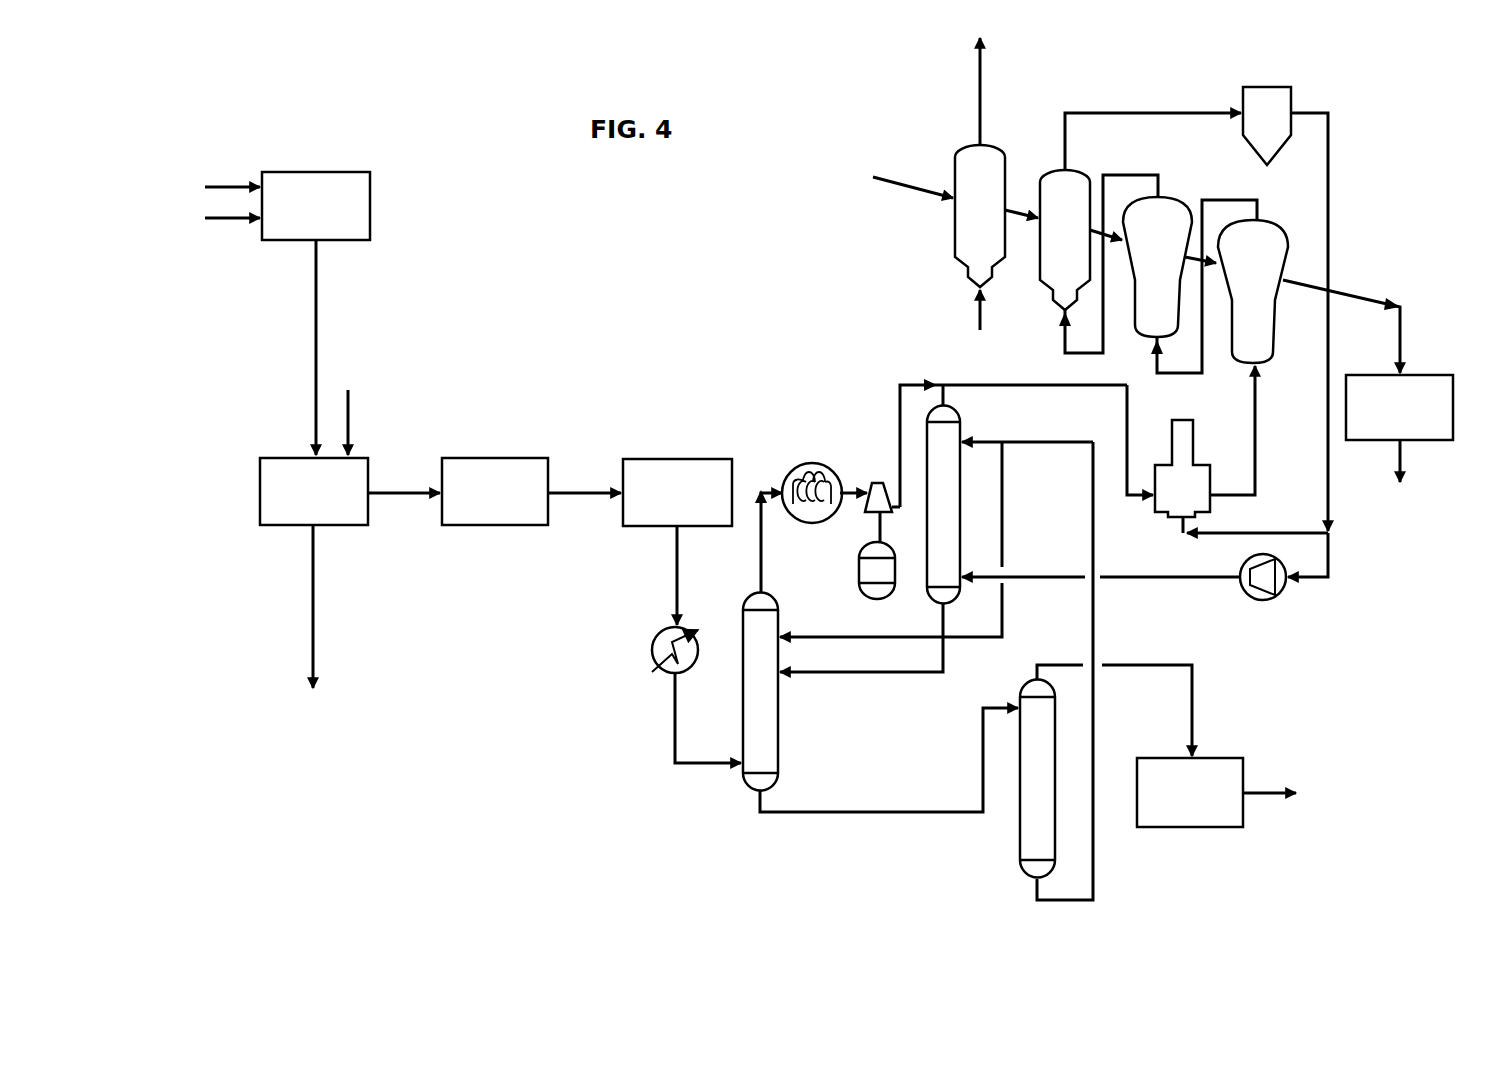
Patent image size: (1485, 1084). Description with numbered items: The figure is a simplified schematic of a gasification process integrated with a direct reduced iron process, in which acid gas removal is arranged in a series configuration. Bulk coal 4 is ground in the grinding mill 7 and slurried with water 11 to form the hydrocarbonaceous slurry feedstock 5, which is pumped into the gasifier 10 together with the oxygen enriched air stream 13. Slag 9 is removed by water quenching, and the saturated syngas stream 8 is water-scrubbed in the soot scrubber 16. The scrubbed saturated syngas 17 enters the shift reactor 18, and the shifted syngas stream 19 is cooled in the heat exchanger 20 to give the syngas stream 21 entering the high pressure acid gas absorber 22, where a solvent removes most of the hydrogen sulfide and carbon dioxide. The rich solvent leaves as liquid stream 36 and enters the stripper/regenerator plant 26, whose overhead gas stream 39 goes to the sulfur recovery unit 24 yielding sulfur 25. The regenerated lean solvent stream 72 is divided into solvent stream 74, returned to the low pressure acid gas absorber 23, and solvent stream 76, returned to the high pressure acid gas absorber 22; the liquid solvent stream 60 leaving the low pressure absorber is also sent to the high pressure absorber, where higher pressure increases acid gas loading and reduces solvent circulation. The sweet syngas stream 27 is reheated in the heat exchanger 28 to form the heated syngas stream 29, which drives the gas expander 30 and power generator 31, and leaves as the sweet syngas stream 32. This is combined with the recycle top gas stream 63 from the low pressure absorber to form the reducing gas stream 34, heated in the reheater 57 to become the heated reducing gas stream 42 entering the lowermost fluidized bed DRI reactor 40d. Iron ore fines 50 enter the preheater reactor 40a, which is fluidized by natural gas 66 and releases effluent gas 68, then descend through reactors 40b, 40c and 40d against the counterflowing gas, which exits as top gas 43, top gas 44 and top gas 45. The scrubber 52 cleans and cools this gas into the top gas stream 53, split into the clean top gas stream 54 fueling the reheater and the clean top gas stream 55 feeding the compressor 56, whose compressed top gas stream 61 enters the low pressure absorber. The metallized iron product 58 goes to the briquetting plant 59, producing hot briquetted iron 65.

The bulk coal 4 is at (220, 187).
The water 11 is at (216, 218).
The grinding mill 7 is at (326, 172).
The hydrocarbonaceous slurry feedstock 5 is at (314, 329).
The oxygen enriched air stream 13 is at (350, 402).
The gasifier 10 is at (260, 491).
The syngas stream 8 is at (392, 496).
The slag 9 is at (312, 592).
The soot scrubber 16 is at (482, 458).
The scrubbed saturated syngas 17 is at (581, 490).
The shift reactor 18 is at (657, 459).
The shifted syngas stream 19 is at (674, 573).
The heat exchanger 20 is at (653, 640).
The syngas stream 21 is at (672, 716).
The high pressure acid gas absorber 22 is at (750, 682).
The sweet syngas stream 27 is at (773, 492).
The heat exchanger 28 is at (818, 463).
The heated syngas stream 29 is at (870, 481).
The gas expander 30 is at (852, 504).
The power generator 31 is at (895, 588).
The sweet syngas stream 32 is at (902, 384).
The recycle top gas stream 63 is at (945, 398).
The low pressure acid gas absorber 23 is at (960, 510).
The reducing gas stream 34 is at (1077, 386).
The solvent stream 74 is at (985, 445).
The regenerated lean solvent stream 72 is at (1094, 745).
The solvent stream 76 is at (1003, 550).
The liquid solvent stream 60 is at (893, 676).
The compressed top gas stream 61 is at (1160, 578).
The liquid stream 36 is at (880, 810).
The stripper/regenerator plant 26 is at (1020, 805).
The overhead gas stream 39 is at (1110, 663).
The sulfur recovery unit 24 is at (1197, 770).
The sulfur 25 is at (1270, 800).
The compressor 56 is at (1250, 598).
The clean top gas stream 55 is at (1298, 580).
The clean top gas stream 54 is at (1268, 532).
The reheater 57 is at (1188, 445).
The heated reducing gas stream 42 is at (1258, 418).
The top gas stream 53 is at (1332, 145).
The scrubber 52 is at (1266, 86).
The top gas 45 is at (1185, 110).
The metallized iron product 58 is at (1360, 296).
The briquetting plant 59 is at (1423, 375).
The hot briquetted iron 65 is at (1401, 476).
The fluidized bed DRI reactor 40a is at (960, 160).
The effluent gas 68 is at (976, 88).
The natural gas 66 is at (976, 316).
The iron ore fines 50 is at (900, 190).
The fluidized bed DRI reactor 40b is at (1048, 182).
The top gas 44 is at (1136, 174).
The fluidized bed DRI reactor 40c is at (1177, 205).
The top gas 43 is at (1176, 372).
The fluidized bed DRI reactor 40d is at (1272, 240).